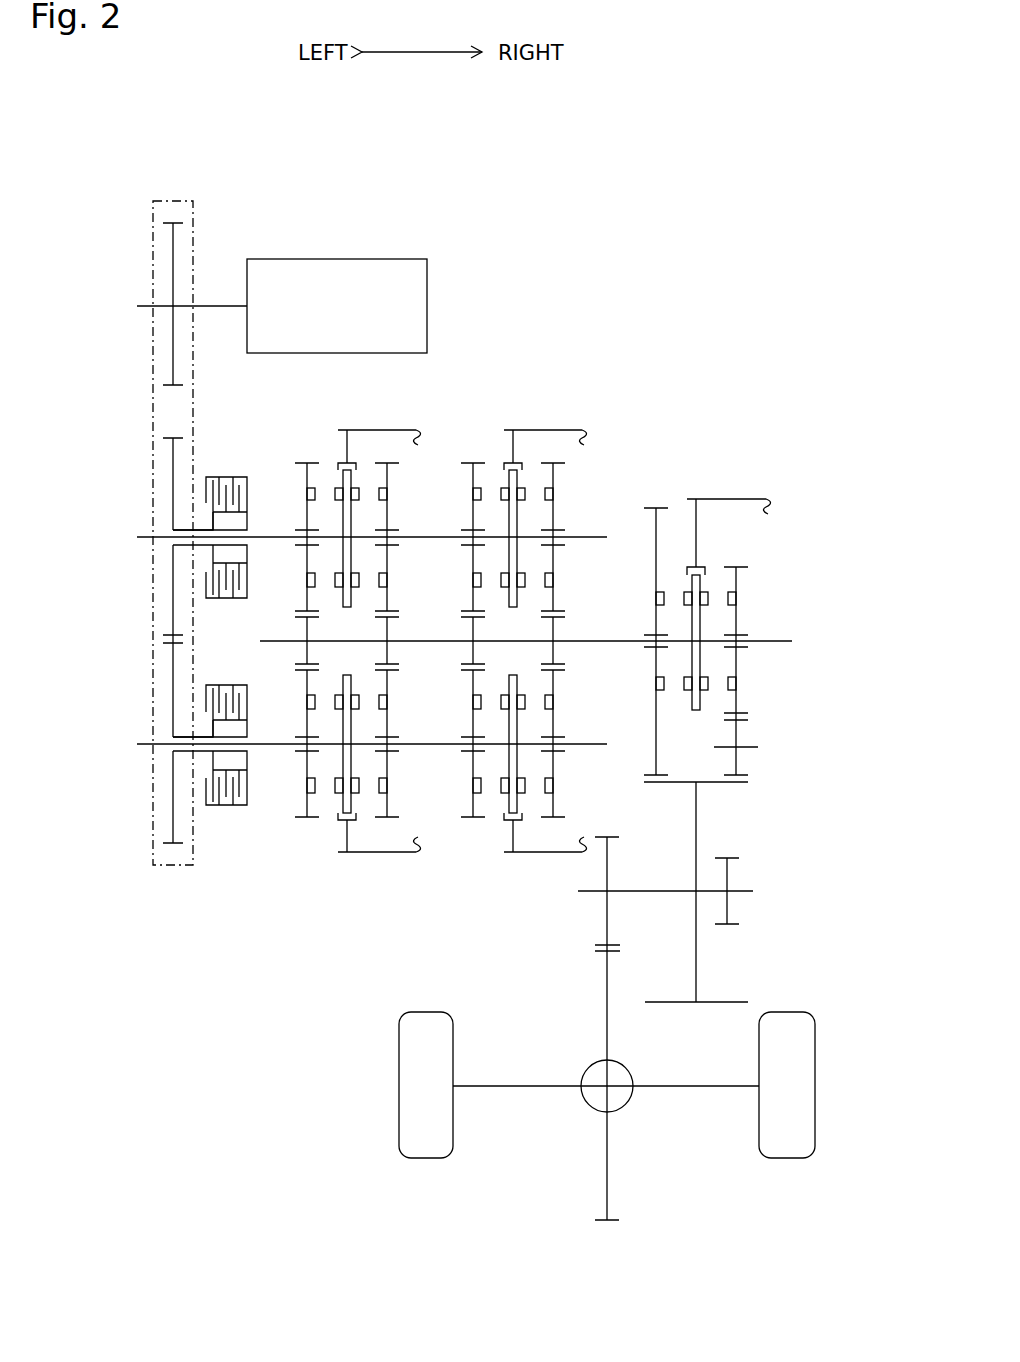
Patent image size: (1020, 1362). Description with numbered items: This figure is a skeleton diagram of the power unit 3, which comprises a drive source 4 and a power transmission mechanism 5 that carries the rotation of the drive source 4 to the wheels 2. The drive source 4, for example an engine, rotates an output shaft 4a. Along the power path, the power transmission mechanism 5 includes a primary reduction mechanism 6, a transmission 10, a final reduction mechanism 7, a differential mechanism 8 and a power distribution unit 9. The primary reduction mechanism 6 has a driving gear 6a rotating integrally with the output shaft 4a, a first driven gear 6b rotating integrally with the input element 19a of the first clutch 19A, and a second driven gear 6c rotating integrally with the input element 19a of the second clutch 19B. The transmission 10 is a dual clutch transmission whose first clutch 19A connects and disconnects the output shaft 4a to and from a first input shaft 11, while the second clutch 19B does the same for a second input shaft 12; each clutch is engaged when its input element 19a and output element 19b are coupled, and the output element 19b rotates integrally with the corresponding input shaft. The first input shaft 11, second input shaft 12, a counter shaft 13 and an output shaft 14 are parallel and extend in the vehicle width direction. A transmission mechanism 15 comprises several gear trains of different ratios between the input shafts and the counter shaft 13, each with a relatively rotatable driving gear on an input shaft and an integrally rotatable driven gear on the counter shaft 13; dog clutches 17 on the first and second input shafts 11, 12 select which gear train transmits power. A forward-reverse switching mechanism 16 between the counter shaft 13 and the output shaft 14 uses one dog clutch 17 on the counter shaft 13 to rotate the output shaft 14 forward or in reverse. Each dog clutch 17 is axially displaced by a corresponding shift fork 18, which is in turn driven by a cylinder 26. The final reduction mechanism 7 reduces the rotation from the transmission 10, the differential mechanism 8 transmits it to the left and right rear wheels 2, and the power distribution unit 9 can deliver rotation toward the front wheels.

The wheels 2 is at (430, 1158).
The power unit 3 is at (581, 166).
The drive source 4 is at (350, 282).
The output shaft 4a is at (215, 304).
The power transmission mechanism 5 is at (235, 1062).
The primary reduction mechanism 6 is at (158, 493).
The driving gear 6a is at (173, 263).
The first driven gear 6b is at (173, 462).
The second driven gear 6c is at (173, 667).
The final reduction mechanism 7 is at (579, 958).
The differential mechanism 8 is at (630, 1067).
The power distribution unit 9 is at (731, 872).
The transmission 10 is at (664, 271).
The first input shaft 11 is at (583, 537).
The second input shaft 12 is at (583, 744).
The counter shaft 13 is at (780, 641).
The output shaft 14 is at (640, 891).
The transmission mechanism 15 is at (287, 851).
The forward-reverse switching mechanism 16 is at (784, 547).
The dog clutch 17 is at (319, 458).
The shift fork 18 is at (339, 463).
The input element 19a is at (213, 523).
The first clutch 19A is at (203, 590).
The output element 19b is at (224, 477).
The second clutch 19B is at (203, 798).
The cylinder 26 is at (380, 430).